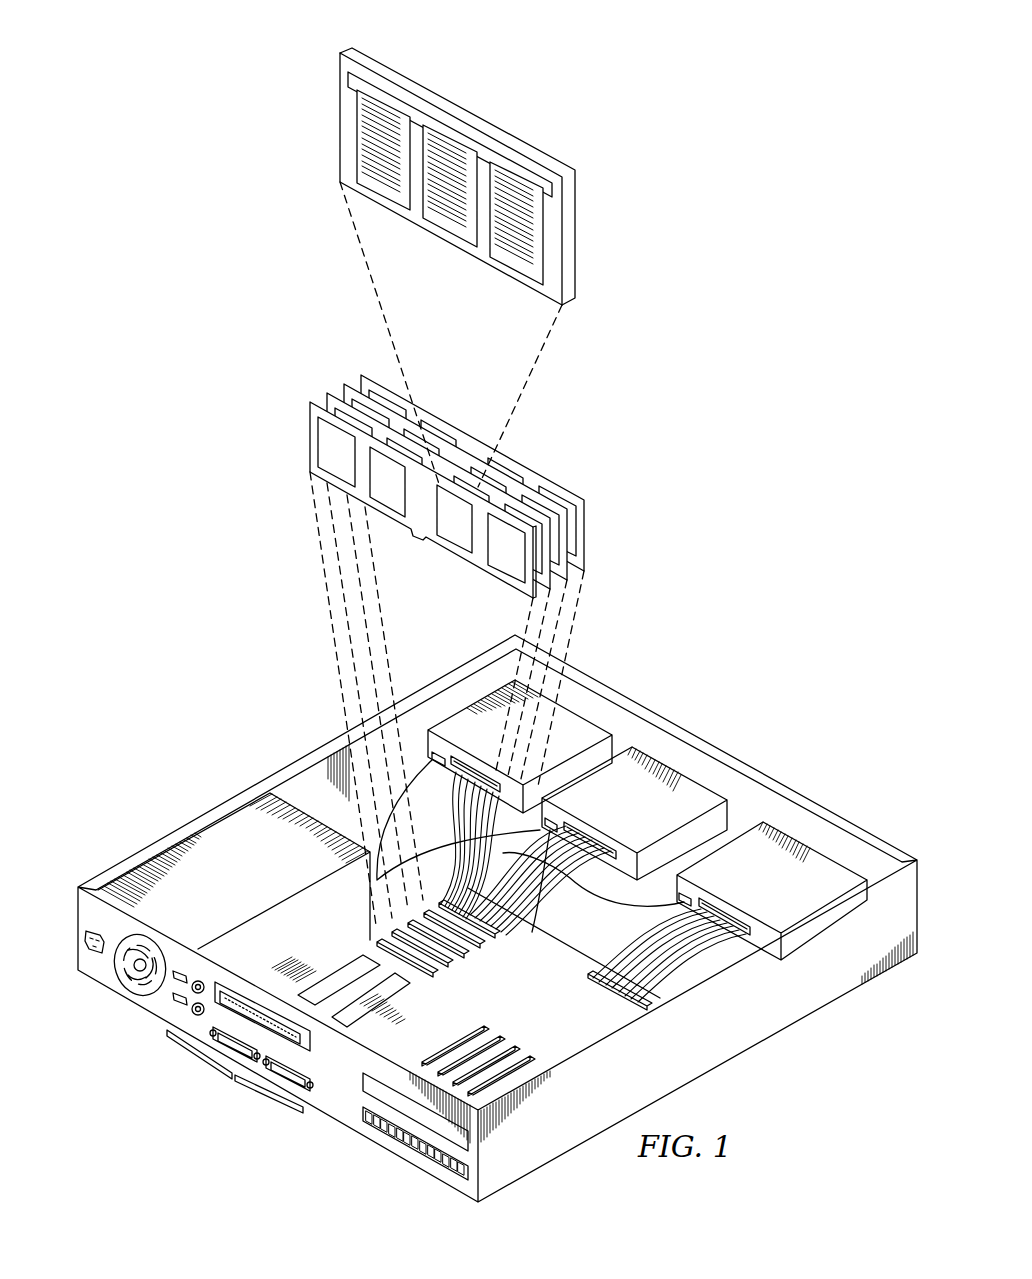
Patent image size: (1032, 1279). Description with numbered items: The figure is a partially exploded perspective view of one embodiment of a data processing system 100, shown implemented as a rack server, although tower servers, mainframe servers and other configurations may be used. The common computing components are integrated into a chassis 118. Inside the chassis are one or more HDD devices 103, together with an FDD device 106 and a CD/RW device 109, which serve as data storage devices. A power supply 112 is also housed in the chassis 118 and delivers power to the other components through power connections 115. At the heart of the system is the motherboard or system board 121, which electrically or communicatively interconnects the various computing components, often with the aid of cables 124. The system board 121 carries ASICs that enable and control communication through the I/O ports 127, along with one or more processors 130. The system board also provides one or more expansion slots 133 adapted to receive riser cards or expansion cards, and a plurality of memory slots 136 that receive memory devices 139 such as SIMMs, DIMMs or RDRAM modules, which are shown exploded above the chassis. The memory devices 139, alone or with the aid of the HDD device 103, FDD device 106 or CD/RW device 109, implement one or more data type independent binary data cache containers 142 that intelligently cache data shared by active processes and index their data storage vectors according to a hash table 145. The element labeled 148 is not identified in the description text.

The data processing system 100 is at (765, 668).
The HDD device 103 is at (792, 894).
The FDD device 106 is at (649, 814).
The CD/RW device 109 is at (572, 727).
The power supply 112 is at (249, 884).
The power connections 115 is at (625, 902).
The chassis 118 is at (820, 997).
The system board 121 is at (595, 1010).
The cables 124 is at (690, 957).
The I/O ports 127 is at (232, 1077).
The processors 130 is at (357, 968).
The expansion slots 133 is at (495, 1033).
The memory slots 136 is at (457, 967).
The memory devices 139 is at (583, 538).
The data cache containers 142 is at (577, 237).
The hash table 145 is at (484, 153).
The integrated circuit chips 148 is at (517, 267).